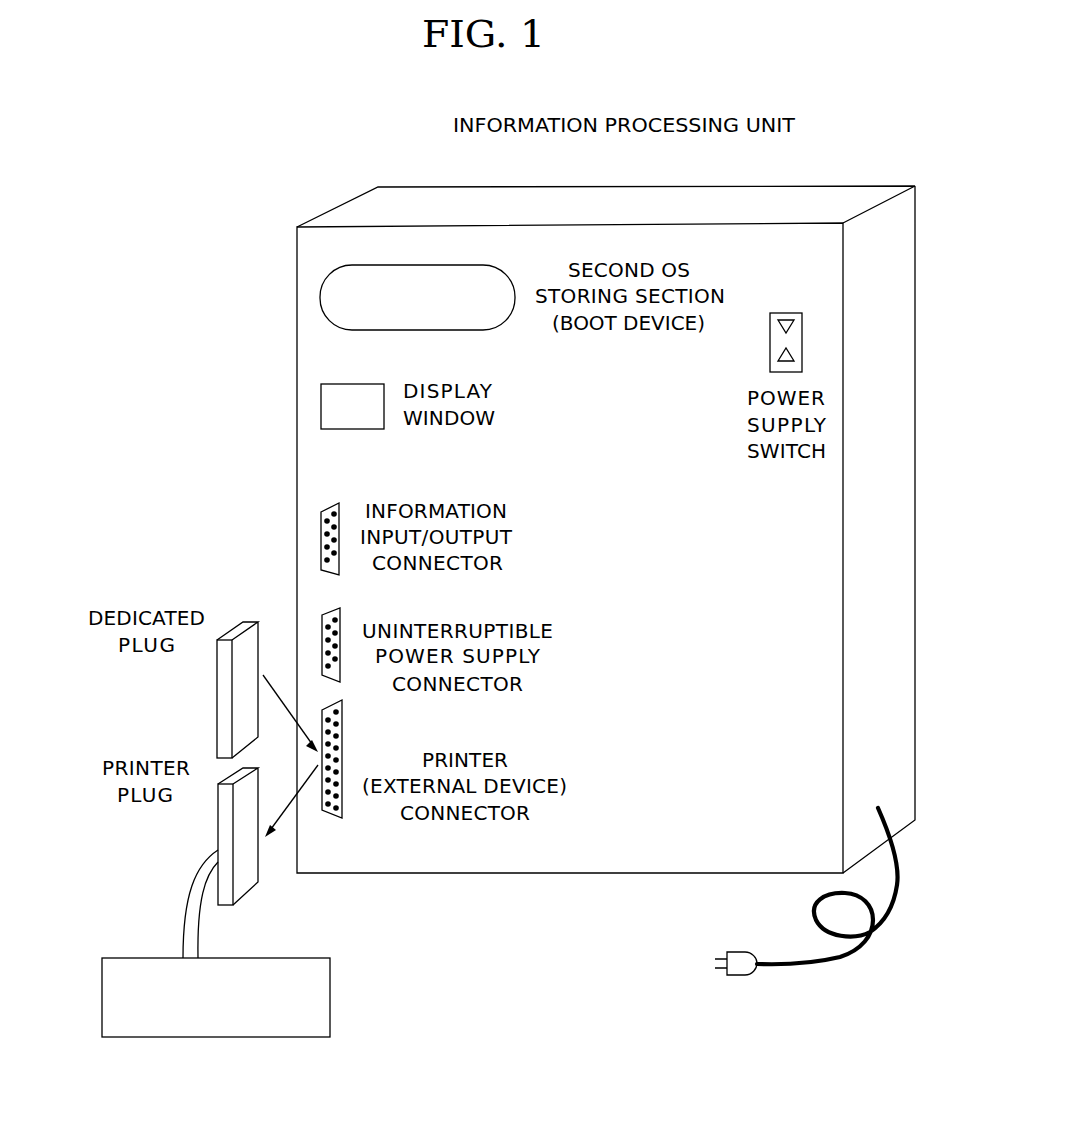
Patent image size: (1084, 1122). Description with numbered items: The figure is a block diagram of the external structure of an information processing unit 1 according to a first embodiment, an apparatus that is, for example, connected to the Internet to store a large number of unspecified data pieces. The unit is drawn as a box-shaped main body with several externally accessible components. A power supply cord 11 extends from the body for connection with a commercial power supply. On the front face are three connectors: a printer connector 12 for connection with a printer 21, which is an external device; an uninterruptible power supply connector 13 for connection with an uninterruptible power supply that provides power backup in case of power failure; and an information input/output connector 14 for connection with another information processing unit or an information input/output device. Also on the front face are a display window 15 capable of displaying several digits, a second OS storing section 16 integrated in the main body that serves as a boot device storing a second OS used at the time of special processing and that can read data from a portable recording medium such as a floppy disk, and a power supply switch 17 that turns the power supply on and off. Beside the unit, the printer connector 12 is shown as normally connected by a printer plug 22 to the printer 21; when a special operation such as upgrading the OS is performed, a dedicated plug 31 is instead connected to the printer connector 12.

The information processing unit 1 is at (590, 187).
The power supply cord 11 is at (812, 966).
The printer connector 12 is at (333, 818).
The uninterruptible power supply connector 13 is at (322, 617).
The information input/output connector 14 is at (321, 512).
The display window 15 is at (321, 393).
The second OS storing section 16 is at (320, 290).
The power supply switch 17 is at (770, 356).
The printer 21 is at (330, 990).
The printer plug 22 is at (218, 828).
The dedicated plug 31 is at (217, 680).